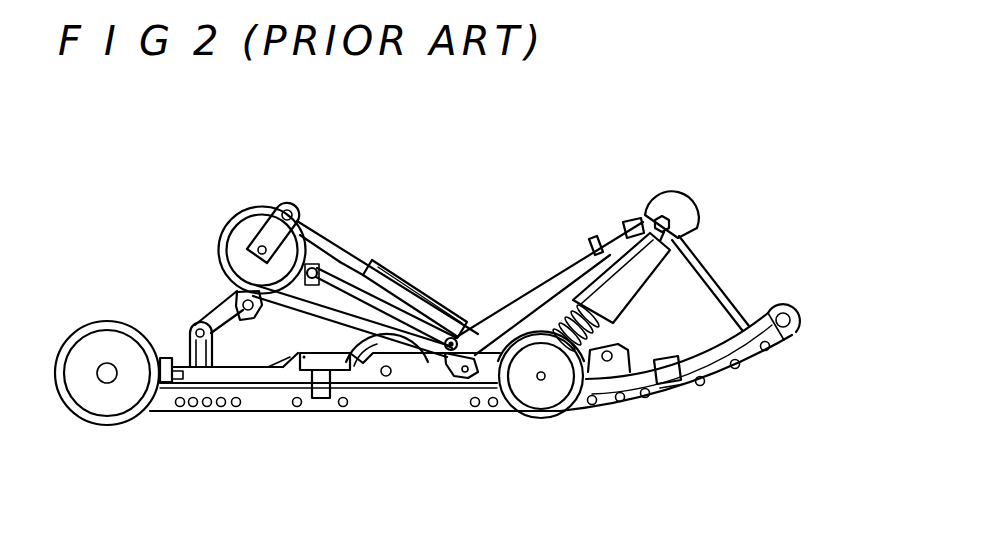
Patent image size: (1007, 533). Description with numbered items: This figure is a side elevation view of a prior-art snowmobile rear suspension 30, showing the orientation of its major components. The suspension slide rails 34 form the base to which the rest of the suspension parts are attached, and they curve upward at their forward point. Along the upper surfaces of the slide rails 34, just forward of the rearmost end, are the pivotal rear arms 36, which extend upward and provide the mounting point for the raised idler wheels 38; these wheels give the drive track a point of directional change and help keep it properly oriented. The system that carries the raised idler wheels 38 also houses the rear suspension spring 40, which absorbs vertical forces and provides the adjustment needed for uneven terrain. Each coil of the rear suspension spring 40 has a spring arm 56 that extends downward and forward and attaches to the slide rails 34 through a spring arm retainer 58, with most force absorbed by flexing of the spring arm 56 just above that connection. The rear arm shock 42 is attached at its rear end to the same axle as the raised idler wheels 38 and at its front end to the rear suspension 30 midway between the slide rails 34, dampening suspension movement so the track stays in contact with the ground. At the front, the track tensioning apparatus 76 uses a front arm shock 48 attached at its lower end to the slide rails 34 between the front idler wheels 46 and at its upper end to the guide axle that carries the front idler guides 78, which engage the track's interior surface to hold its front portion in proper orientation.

The rear suspension 30 is at (170, 232).
The suspension slide rails 34 is at (183, 413).
The rear arms 36 is at (95, 423).
The raised idler wheels 38 is at (233, 210).
The rear suspension spring 40 is at (296, 185).
The rear arm shock 42 is at (372, 262).
The front idler wheels 46 is at (522, 413).
The front arm shock 48 is at (610, 320).
The spring arm 56 is at (347, 313).
The spring arm retainer 58 is at (462, 372).
The track tensioning apparatus 76 is at (668, 315).
The front idler guides 78 is at (697, 207).